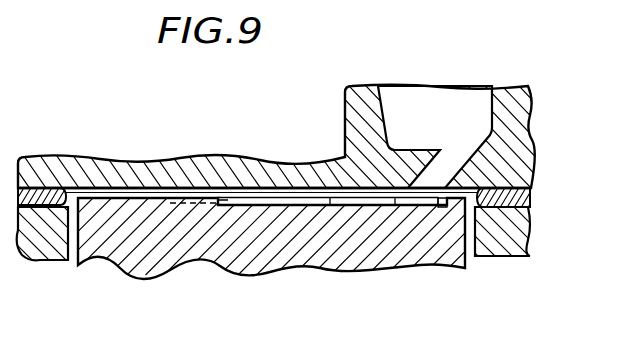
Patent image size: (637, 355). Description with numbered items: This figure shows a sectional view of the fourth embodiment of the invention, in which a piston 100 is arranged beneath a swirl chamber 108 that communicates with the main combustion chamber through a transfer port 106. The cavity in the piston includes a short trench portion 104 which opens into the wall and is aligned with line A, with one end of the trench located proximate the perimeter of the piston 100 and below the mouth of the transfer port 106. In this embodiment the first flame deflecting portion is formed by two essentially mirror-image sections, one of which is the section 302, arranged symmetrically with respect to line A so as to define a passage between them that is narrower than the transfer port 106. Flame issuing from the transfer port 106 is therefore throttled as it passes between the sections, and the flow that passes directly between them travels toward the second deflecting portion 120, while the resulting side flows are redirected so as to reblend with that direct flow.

The piston 100 is at (442, 245).
The trench portion 104 is at (435, 200).
The transfer port 106 is at (452, 167).
The swirl chamber 108 is at (492, 113).
The second deflecting portion 120 is at (227, 200).
The mirror image section 302 is at (338, 200).